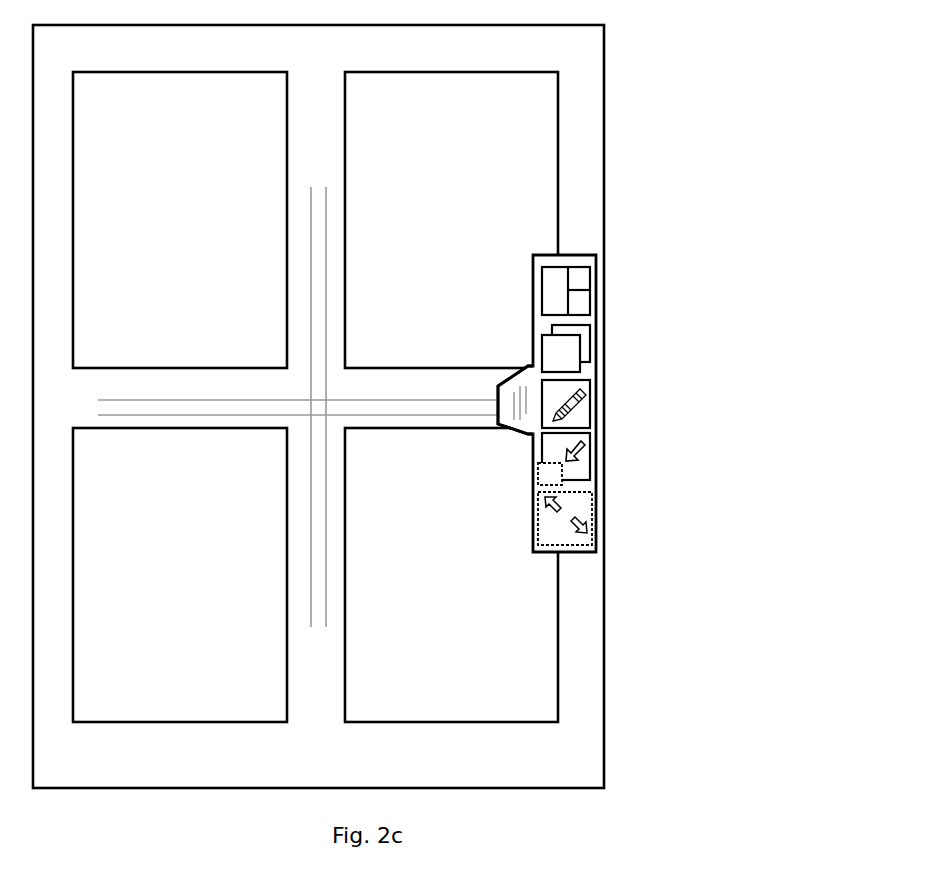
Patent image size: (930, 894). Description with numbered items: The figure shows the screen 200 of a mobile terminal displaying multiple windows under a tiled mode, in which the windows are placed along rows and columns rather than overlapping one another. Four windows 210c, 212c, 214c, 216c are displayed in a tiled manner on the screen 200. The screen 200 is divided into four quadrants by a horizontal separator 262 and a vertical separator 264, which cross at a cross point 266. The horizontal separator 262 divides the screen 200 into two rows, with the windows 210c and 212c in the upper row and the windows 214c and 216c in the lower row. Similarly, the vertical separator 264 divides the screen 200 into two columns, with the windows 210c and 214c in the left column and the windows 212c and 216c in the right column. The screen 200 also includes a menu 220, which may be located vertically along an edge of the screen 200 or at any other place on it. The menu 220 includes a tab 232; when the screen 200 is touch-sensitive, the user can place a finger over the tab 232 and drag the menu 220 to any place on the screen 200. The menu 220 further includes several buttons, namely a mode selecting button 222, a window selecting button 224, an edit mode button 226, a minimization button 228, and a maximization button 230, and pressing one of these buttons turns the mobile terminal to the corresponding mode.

The screen 200 is at (591, 59).
The window 210c is at (180, 220).
The window 212c is at (451, 220).
The window 214c is at (180, 575).
The window 216c is at (451, 575).
The menu 220 is at (587, 253).
The mode selecting button 222 is at (590, 290).
The window selecting button 224 is at (583, 352).
The edit mode button 226 is at (592, 408).
The minimization button 228 is at (592, 457).
The maximization button 230 is at (592, 520).
The tab 232 is at (512, 382).
The horizontal separator 262 is at (112, 400).
The vertical separator 264 is at (323, 615).
The cross point 266 is at (319, 407).